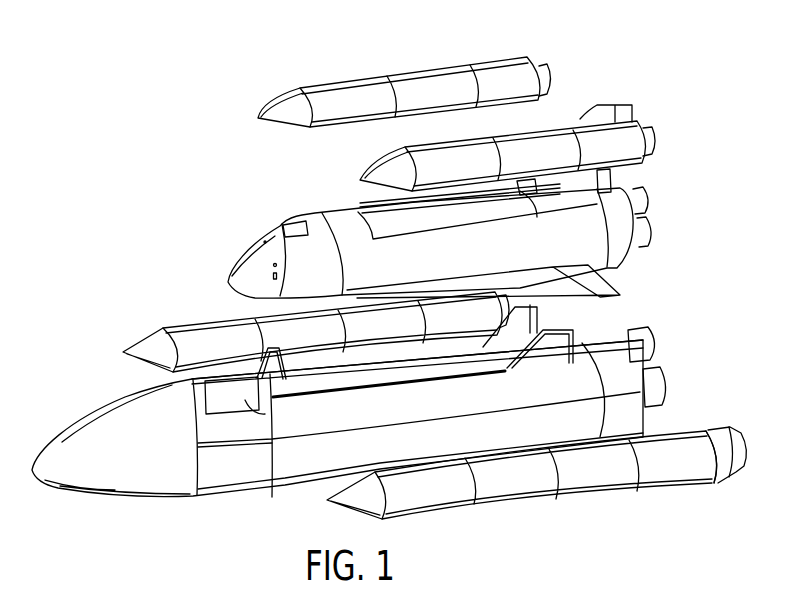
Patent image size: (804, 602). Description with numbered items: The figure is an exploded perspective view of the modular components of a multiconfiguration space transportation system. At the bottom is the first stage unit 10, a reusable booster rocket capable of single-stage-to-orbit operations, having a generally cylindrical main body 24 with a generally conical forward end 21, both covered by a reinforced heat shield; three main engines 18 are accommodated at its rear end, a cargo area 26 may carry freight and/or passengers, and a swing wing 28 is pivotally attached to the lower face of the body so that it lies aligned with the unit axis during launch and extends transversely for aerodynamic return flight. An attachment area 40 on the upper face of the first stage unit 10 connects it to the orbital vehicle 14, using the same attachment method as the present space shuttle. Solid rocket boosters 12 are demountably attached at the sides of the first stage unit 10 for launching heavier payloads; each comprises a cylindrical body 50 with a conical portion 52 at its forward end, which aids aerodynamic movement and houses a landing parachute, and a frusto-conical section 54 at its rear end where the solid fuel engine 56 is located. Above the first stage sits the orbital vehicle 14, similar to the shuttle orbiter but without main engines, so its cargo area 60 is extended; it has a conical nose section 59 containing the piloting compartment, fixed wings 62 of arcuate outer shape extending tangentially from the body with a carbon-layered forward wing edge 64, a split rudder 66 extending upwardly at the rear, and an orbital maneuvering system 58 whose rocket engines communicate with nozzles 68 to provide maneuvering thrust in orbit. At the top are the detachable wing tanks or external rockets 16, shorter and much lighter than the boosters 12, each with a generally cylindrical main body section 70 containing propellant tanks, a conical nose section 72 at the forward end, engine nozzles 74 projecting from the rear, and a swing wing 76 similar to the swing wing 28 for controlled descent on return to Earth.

The first stage unit 10 is at (366, 419).
The solid rocket boosters 12 is at (423, 403).
The orbital vehicle 14 is at (446, 232).
The external rockets 16 is at (460, 104).
The main engines 18 is at (660, 378).
The forward end 21 is at (128, 487).
The main body 24 is at (390, 362).
The cargo area 26 is at (290, 423).
The swing wing 28 is at (278, 481).
The attachment area 40 is at (567, 325).
The cylindrical body 50 is at (222, 330).
The conical portion 52 is at (142, 342).
The frusto-conical section 54 is at (725, 478).
The engine 56 is at (742, 427).
The orbital maneuvering system 58 is at (655, 236).
The conical nose section 59 is at (242, 262).
The cargo area 60 is at (372, 220).
The fixed wings 62 is at (598, 280).
The forward wing edge 64 is at (479, 304).
The split rudder 66 is at (607, 112).
The nozzles 68 is at (647, 200).
The main body section 70 is at (398, 76).
The conical nose section 72 is at (272, 107).
The engine nozzles 74 is at (542, 68).
The swing wing 76 is at (455, 110).